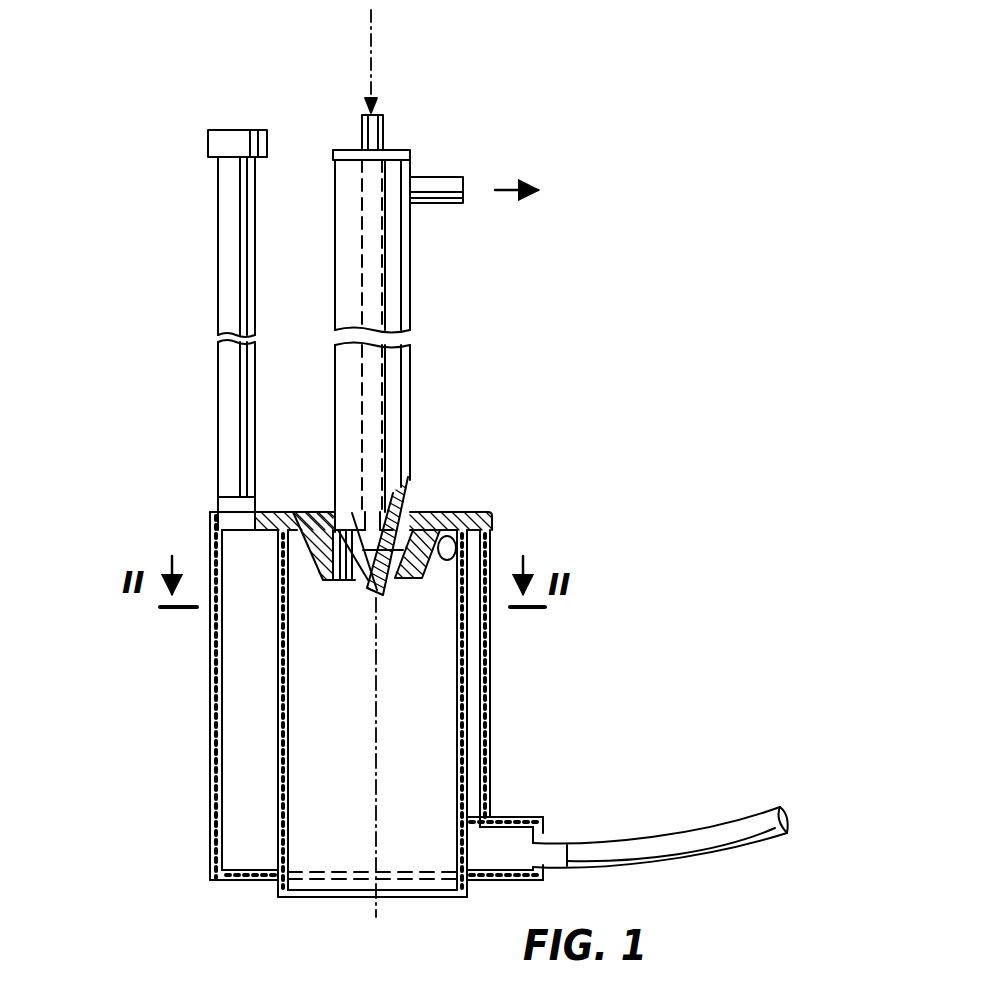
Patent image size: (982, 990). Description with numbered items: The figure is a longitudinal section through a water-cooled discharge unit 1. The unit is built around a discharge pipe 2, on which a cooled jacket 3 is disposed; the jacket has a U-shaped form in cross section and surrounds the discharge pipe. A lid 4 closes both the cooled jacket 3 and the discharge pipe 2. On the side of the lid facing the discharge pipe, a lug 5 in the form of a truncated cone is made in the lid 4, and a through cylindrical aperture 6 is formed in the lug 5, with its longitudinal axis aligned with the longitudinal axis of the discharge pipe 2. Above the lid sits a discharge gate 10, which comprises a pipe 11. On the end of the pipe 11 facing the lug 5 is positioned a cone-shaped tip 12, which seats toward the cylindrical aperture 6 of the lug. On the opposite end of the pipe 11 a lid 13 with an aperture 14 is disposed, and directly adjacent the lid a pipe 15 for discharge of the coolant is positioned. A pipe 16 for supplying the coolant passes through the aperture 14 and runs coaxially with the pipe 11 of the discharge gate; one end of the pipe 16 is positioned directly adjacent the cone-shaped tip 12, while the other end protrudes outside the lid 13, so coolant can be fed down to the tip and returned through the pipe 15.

The cooled discharge unit 1 is at (486, 405).
The discharge pipe 2 is at (457, 703).
The cooled jacket 3 is at (493, 740).
The lid 4 is at (444, 512).
The lug 5 is at (488, 547).
The through cylindrical aperture 6 is at (400, 575).
The discharge gate 10 is at (418, 410).
The pipe 11 is at (408, 313).
The cone-shaped tip 12 is at (367, 588).
The lid 13 is at (410, 156).
The aperture 14 is at (382, 148).
The pipe for discharge of the coolant 15 is at (437, 203).
The pipe for supplying the coolant 16 is at (362, 128).